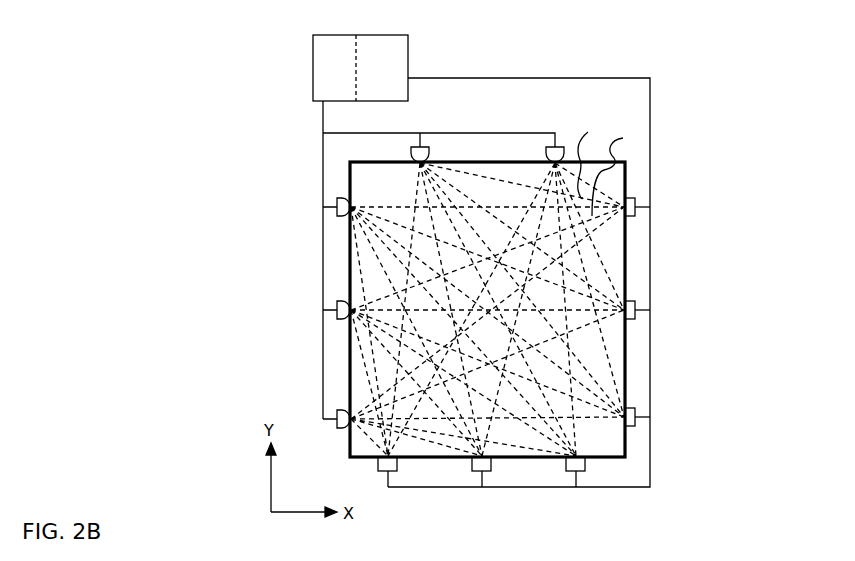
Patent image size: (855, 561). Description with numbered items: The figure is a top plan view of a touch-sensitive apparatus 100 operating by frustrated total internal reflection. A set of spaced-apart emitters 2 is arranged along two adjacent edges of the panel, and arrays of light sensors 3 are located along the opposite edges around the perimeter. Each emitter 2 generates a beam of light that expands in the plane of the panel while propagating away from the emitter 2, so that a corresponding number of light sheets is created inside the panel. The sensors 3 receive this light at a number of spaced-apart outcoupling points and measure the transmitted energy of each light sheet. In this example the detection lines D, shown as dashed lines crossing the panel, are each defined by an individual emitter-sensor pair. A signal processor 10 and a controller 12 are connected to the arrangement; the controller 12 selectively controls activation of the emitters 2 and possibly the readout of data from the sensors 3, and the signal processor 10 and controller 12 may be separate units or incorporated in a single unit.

The touch-sensitive apparatus 100 is at (702, 90).
The signal processor 10 is at (400, 37).
The controller 12 is at (313, 52).
The emitters 2 is at (423, 143).
The sensors 3 is at (637, 412).
The detection lines D is at (601, 163).